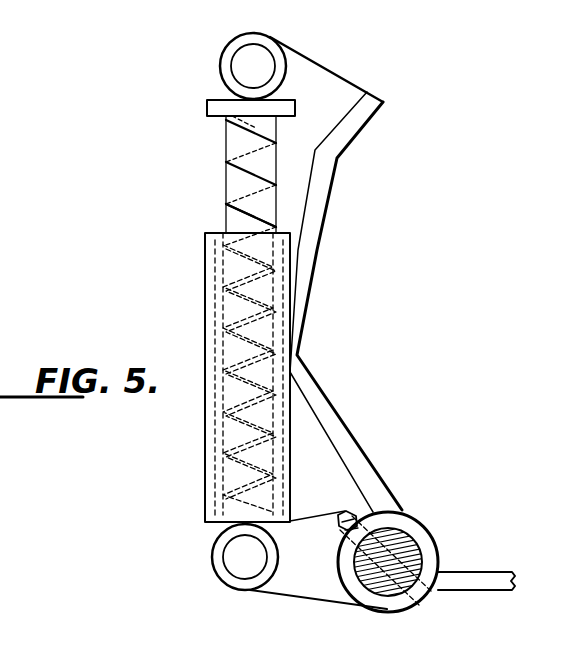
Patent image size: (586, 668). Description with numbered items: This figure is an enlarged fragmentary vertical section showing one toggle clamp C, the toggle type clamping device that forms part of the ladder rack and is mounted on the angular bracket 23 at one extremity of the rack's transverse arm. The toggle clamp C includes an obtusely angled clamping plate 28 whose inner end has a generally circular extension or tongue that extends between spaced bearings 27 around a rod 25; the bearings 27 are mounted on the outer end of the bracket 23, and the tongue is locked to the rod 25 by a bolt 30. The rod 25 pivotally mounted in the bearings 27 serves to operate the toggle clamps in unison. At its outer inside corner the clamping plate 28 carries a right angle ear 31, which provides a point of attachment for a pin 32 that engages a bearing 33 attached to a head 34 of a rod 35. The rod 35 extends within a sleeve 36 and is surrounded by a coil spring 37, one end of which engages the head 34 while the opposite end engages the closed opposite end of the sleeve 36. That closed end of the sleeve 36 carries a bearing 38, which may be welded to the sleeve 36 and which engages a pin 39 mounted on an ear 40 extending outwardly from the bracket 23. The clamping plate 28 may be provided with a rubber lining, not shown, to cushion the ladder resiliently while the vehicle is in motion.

The angular bracket 23 is at (473, 580).
The rod 25 is at (388, 596).
The bearings 27 is at (408, 518).
The clamping plate 28 is at (314, 248).
The bolt 30 is at (360, 593).
The right angle ear 31 is at (312, 72).
The pin 32 is at (241, 54).
The bearing 33 is at (220, 62).
The head 34 is at (213, 106).
The rod 35 is at (228, 144).
The sleeve 36 is at (205, 288).
The coil spring 37 is at (226, 213).
The bearing 38 is at (215, 541).
The pin 39 is at (233, 560).
The ear 40 is at (312, 590).
The toggle clamp C is at (365, 442).